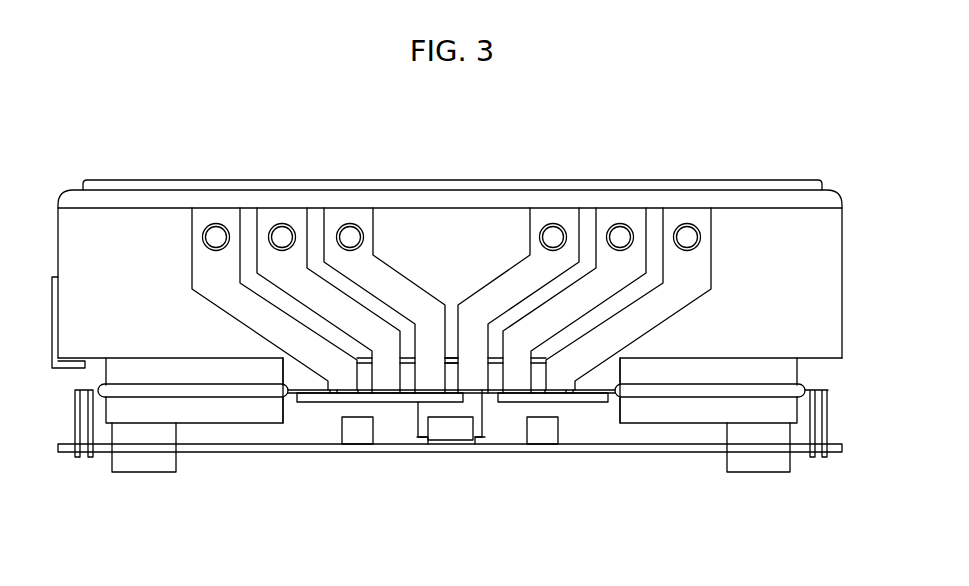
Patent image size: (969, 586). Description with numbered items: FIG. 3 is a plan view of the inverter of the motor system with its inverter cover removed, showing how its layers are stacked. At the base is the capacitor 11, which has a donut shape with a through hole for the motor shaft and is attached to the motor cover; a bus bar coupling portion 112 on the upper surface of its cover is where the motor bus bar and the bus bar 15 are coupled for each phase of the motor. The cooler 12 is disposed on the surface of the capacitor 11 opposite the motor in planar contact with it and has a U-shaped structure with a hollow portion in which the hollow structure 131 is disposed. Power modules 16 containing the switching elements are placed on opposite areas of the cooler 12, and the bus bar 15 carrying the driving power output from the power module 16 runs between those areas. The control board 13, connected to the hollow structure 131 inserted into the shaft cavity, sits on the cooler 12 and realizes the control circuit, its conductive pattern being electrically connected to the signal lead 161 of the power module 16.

The capacitor 11 is at (460, 198).
The bus bar coupling portion 112 is at (216, 236).
The cooler 12 is at (230, 412).
The control board 13 is at (632, 448).
The hollow structure 131 is at (420, 420).
The bus bar 15 is at (565, 363).
The power module 16 is at (689, 390).
The signal lead 161 is at (90, 422).